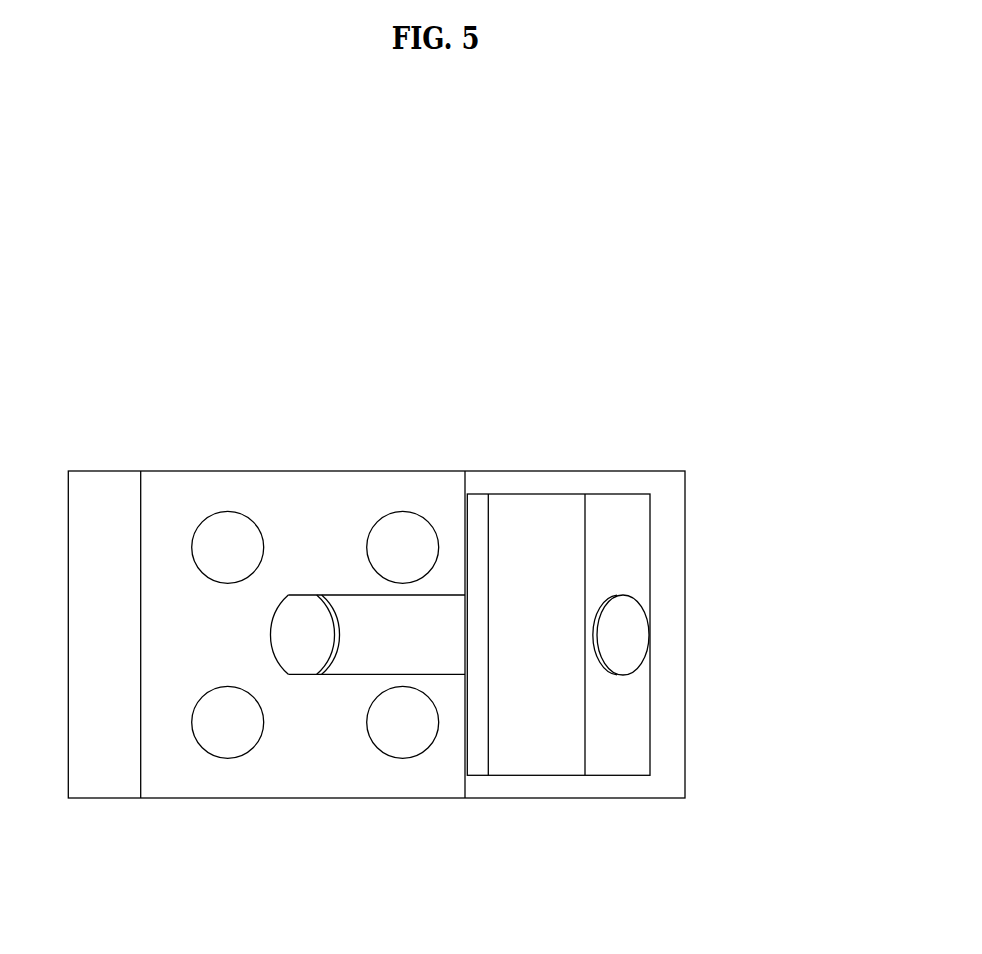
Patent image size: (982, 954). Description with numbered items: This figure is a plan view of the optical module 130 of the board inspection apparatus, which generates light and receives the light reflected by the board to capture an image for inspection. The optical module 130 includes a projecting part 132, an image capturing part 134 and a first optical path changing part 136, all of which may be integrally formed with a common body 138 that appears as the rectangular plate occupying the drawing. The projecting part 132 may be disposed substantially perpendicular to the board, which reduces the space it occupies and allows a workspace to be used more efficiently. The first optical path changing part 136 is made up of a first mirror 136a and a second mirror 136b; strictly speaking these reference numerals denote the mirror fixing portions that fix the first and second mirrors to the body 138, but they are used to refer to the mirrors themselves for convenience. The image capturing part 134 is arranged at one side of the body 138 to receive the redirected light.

The optical module 130 is at (285, 304).
The projecting part 132 is at (223, 535).
The image capturing part 134 is at (672, 602).
The first optical path changing part 136 is at (548, 347).
The first mirror 136a is at (306, 603).
The second mirror 136b is at (625, 612).
The body 138 is at (317, 782).